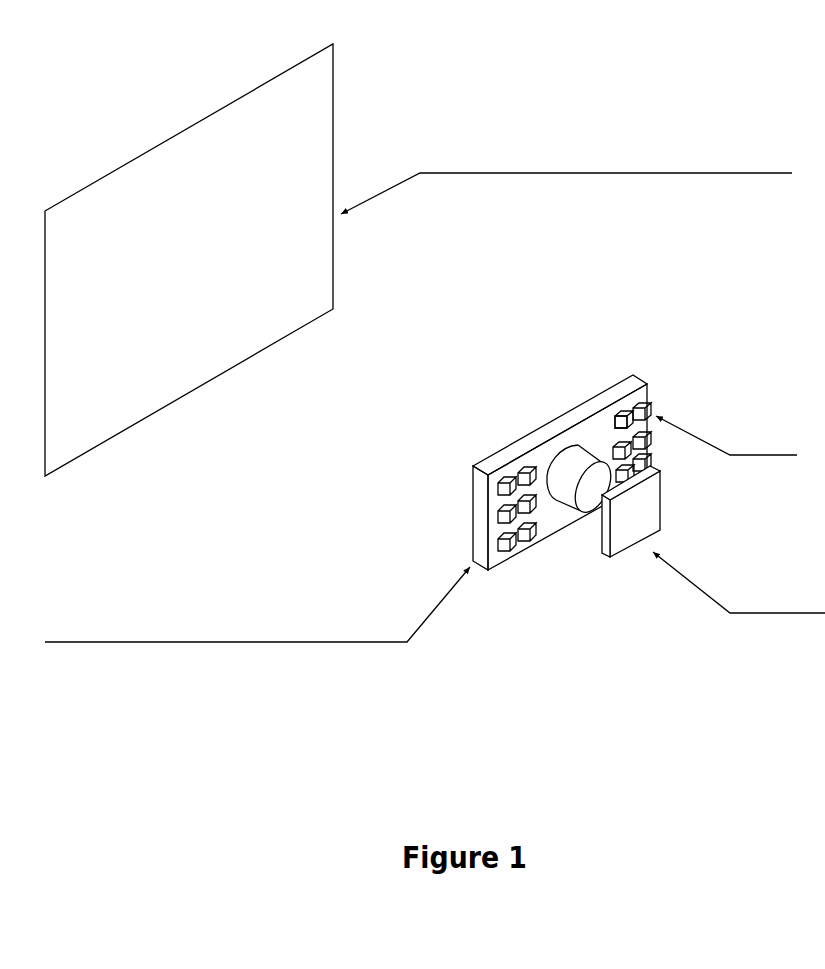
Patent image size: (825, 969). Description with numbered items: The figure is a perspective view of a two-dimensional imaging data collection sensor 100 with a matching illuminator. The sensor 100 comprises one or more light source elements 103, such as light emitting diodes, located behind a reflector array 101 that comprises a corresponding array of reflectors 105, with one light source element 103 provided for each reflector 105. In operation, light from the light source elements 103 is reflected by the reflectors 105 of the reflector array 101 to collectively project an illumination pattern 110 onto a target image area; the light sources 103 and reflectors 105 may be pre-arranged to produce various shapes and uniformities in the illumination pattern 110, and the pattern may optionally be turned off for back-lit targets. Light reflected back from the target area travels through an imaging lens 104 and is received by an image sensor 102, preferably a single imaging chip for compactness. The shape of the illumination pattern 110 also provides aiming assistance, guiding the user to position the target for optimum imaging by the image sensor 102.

The 2D imaging data collection sensor 100 is at (799, 63).
The illumination pattern 110 is at (336, 136).
The reflector array 101 is at (538, 436).
The image sensor 102 is at (624, 539).
The light source elements 103 is at (624, 412).
The imaging lens 104 is at (572, 499).
The reflector 105 is at (606, 417).